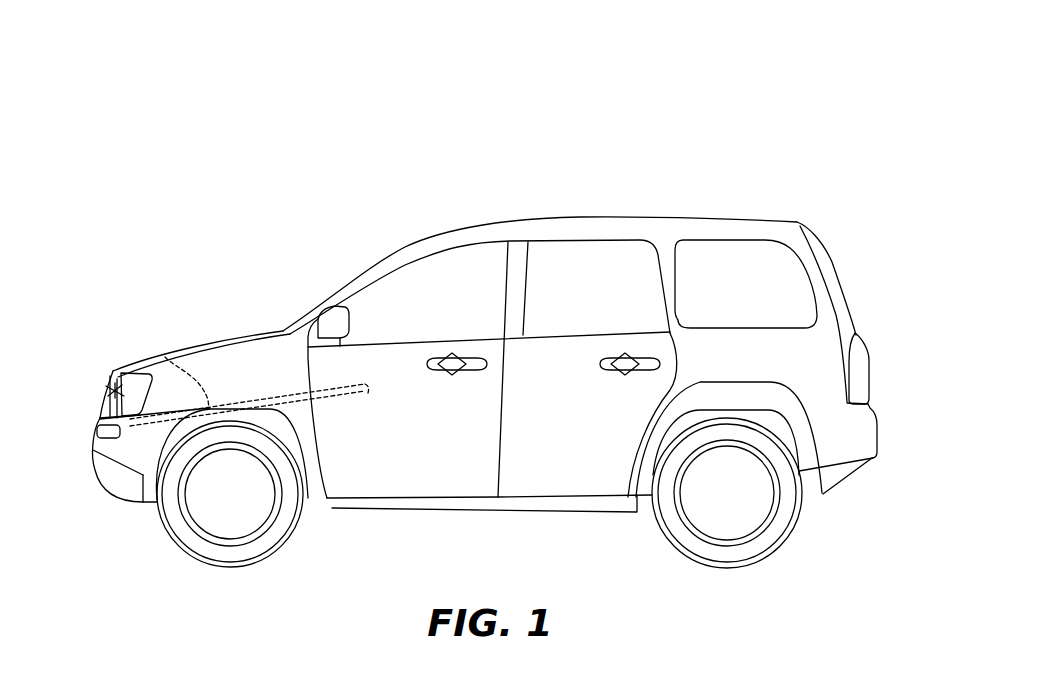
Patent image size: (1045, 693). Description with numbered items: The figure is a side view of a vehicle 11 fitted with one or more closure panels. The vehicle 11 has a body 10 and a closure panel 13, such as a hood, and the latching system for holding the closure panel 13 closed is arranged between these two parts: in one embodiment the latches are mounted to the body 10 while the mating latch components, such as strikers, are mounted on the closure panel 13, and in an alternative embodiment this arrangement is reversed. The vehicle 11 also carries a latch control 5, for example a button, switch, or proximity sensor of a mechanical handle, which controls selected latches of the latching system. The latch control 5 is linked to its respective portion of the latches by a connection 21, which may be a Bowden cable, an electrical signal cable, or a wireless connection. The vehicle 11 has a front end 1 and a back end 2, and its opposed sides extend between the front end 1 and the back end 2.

The front end 1 is at (78, 457).
The back end 2 is at (888, 420).
The latch control 5 is at (368, 393).
The body 10 is at (814, 367).
The vehicle 11 is at (748, 170).
The closure panel 13 is at (837, 237).
The connection 21 is at (165, 357).